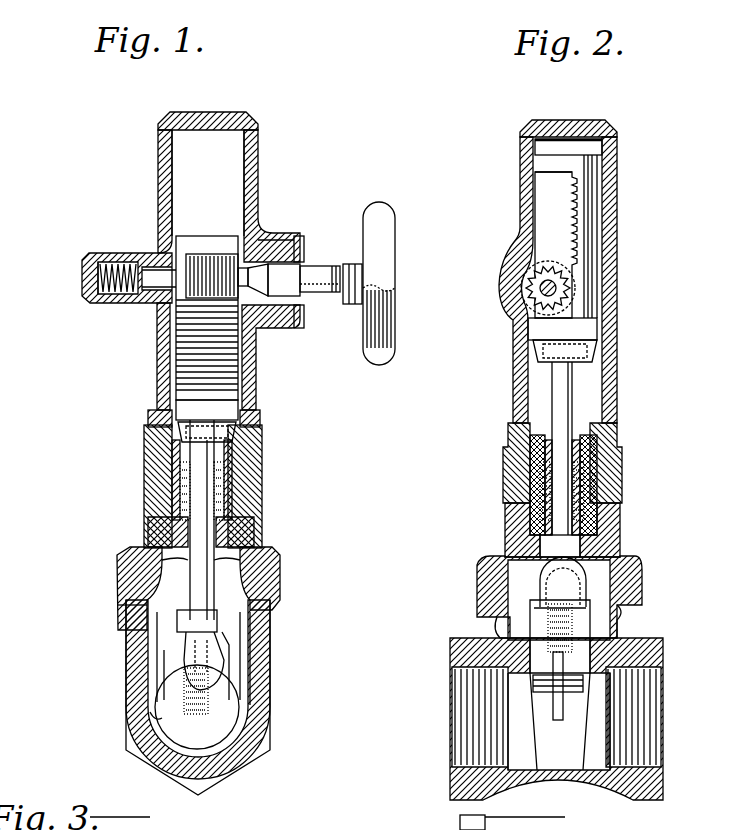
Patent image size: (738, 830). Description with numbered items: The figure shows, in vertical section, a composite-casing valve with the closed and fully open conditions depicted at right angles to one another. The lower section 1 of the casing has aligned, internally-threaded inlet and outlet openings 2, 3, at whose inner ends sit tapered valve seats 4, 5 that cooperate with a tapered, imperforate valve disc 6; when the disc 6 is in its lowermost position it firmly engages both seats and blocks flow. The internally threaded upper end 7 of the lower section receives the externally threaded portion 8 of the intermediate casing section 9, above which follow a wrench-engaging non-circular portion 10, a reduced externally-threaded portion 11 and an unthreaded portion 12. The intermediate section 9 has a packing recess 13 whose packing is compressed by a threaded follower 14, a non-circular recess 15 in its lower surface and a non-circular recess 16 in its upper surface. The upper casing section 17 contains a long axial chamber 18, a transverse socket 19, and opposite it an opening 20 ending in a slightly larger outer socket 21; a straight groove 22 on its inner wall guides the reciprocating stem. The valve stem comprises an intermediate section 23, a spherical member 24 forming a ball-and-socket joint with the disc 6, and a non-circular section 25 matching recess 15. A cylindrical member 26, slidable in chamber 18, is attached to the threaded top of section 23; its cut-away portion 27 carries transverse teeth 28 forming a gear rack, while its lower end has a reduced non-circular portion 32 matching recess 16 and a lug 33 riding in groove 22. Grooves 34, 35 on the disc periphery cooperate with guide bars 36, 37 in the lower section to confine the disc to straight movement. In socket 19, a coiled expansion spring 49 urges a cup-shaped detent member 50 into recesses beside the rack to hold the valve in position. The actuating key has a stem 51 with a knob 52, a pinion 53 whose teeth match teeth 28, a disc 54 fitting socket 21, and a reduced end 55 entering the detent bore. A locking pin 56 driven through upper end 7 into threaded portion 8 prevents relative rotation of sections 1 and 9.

In FIG. 1, the lower section of the valve casing 1 is at (225, 652).
In FIG. 2, the lower section of the valve casing 1 is at (642, 648).
In FIG. 2, the inlet opening 2 is at (465, 702).
In FIG. 1, the outlet opening 3 is at (115, 532).
In FIG. 2, the outlet opening 3 is at (665, 711).
In FIG. 2, the valve seat 4 is at (524, 745).
In FIG. 2, the valve seat 5 is at (608, 732).
In FIG. 1, the valve disc 6 is at (236, 724).
In FIG. 2, the valve disc 6 is at (592, 626).
In FIG. 1, the upper end of the base portion 7 is at (270, 602).
In FIG. 2, the upper end of the base portion 7 is at (638, 591).
In FIG. 1, the externally threaded portion 8 is at (250, 575).
In FIG. 2, the externally threaded portion 8 is at (626, 574).
In FIG. 1, the intermediate casing section 9 is at (248, 530).
In FIG. 2, the intermediate casing section 9 is at (602, 541).
In FIG. 1, the non-circular portion 10 is at (145, 525).
In FIG. 2, the non-circular portion 10 is at (505, 541).
In FIG. 1, the reduced, externally-threaded portion 11 is at (255, 482).
In FIG. 2, the reduced, externally-threaded portion 11 is at (604, 497).
In FIG. 1, the unthreaded portion 12 is at (262, 447).
In FIG. 2, the unthreaded portion 12 is at (617, 456).
In FIG. 1, the packing recess 13 is at (232, 470).
In FIG. 2, the packing recess 13 is at (598, 480).
In FIG. 1, the threaded nut or follower 14 is at (258, 426).
In FIG. 2, the threaded nut or follower 14 is at (588, 447).
In FIG. 1, the non-circular recess 15 is at (236, 562).
In FIG. 2, the non-circular recess 16 is at (606, 417).
In FIG. 1, the upper section of the valve casing 17 is at (258, 180).
In FIG. 2, the upper section of the valve casing 17 is at (617, 189).
In FIG. 1, the axially-extending chamber 18 is at (208, 183).
In FIG. 2, the axially-extending chamber 18 is at (588, 146).
In FIG. 1, the socket 19 is at (100, 253).
In FIG. 1, the opening 20 is at (262, 240).
In FIG. 1, the outer socket 21 is at (302, 245).
In FIG. 1, the slot or groove 22 is at (160, 346).
In FIG. 1, the intermediate section of the valve stem 23 is at (212, 520).
In FIG. 2, the intermediate section of the valve stem 23 is at (566, 388).
In FIG. 1, the spherical member 24 is at (232, 642).
In FIG. 2, the spherical member 24 is at (592, 576).
In FIG. 1, the non-circular section 25 is at (180, 621).
In FIG. 2, the non-circular section 25 is at (584, 540).
In FIG. 1, the cylindrical member 26 is at (235, 238).
In FIG. 2, the cylindrical member 26 is at (590, 262).
In FIG. 2, the cut-away portion 27 is at (568, 232).
In FIG. 1, the transverse teeth 28 is at (255, 356).
In FIG. 2, the transverse teeth 28 is at (562, 191).
In FIG. 1, the reduced, non-circular portion 32 is at (178, 430).
In FIG. 2, the reduced, non-circular portion 32 is at (598, 352).
In FIG. 1, the lug or projection 33 is at (176, 408).
In FIG. 1, the groove 34 is at (228, 703).
In FIG. 2, the groove 34 is at (560, 628).
In FIG. 1, the groove 35 is at (152, 716).
In FIG. 2, the groove 35 is at (520, 648).
In FIG. 1, the guide bar 36 is at (246, 670).
In FIG. 2, the guide bar 36 is at (565, 714).
In FIG. 1, the guide bar 37 is at (152, 663).
In FIG. 1, the coiled expansion spring 49 is at (108, 300).
In FIG. 1, the cup-shaped detent member 50 is at (142, 252).
In FIG. 1, the stem 51 is at (303, 296).
In FIG. 1, the knob or handle 52 is at (390, 236).
In FIG. 1, the pinion 53 is at (188, 252).
In FIG. 2, the pinion 53 is at (538, 275).
In FIG. 1, the disc 54 is at (303, 265).
In FIG. 1, the reduced end 55 is at (168, 292).
In FIG. 1, the locking pin 56 is at (120, 603).